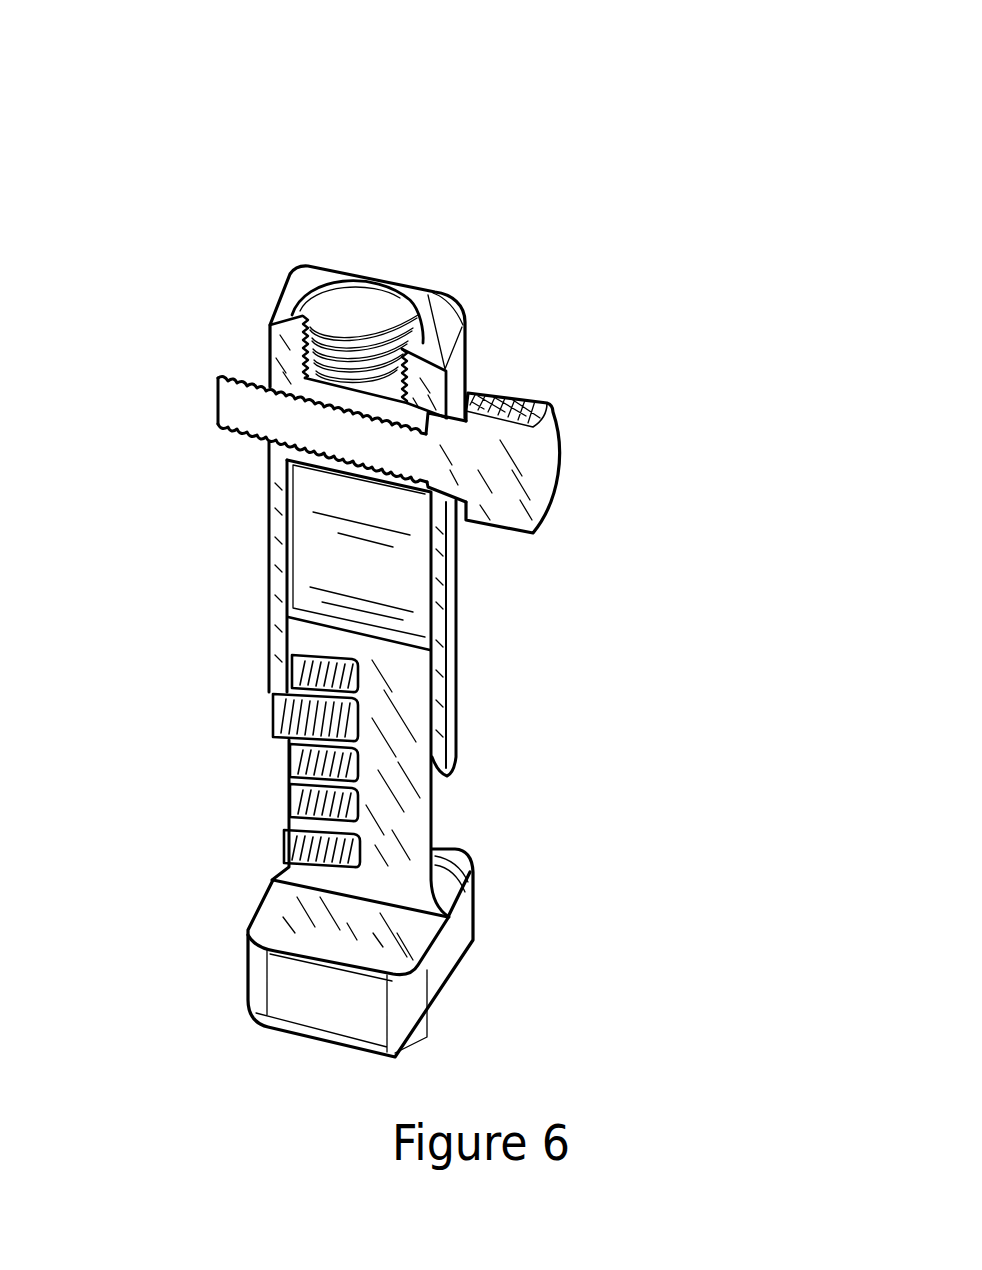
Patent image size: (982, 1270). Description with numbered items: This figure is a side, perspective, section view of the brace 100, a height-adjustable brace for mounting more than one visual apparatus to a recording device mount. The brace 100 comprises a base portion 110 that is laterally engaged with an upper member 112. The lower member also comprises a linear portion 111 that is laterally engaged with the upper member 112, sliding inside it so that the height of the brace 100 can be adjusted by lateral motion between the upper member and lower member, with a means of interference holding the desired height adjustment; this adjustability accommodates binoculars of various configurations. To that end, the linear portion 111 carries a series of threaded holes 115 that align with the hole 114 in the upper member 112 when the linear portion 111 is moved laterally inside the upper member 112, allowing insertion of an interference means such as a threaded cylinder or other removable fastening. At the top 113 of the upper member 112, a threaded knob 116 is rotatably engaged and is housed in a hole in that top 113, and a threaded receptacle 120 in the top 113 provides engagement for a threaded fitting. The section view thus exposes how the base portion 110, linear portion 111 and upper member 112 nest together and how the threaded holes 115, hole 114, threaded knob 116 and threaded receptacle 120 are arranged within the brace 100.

The brace 100 is at (380, 48).
The base portion 110 is at (332, 1012).
The linear portion 111 is at (400, 801).
The upper member 112 is at (458, 687).
The top of the upper member 113 is at (462, 370).
The hole 114 is at (268, 702).
The threaded holes 115 is at (278, 792).
The threaded knob 116 is at (550, 443).
The threaded receptacle 120 is at (322, 288).